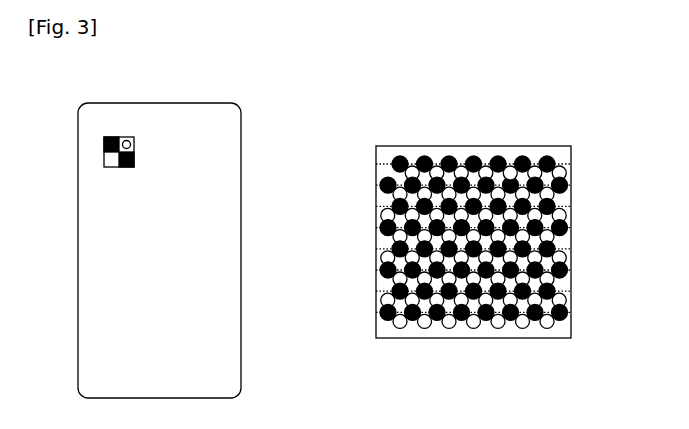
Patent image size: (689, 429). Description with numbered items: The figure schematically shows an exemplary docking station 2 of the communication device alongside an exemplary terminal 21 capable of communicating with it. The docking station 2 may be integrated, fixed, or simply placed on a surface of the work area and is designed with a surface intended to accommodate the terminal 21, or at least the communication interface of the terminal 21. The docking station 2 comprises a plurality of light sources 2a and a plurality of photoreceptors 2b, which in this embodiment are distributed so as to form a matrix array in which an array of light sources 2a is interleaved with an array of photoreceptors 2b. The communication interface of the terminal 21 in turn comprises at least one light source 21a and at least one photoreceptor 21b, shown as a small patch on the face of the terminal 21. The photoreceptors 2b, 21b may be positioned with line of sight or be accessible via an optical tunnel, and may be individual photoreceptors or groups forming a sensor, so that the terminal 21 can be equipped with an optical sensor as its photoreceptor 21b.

The terminal 21 is at (236, 100).
The light source 21a is at (124, 137).
The photoreceptor 21b is at (113, 137).
The docking station 2 is at (392, 146).
The light sources 2a is at (515, 160).
The photoreceptors 2b is at (427, 155).